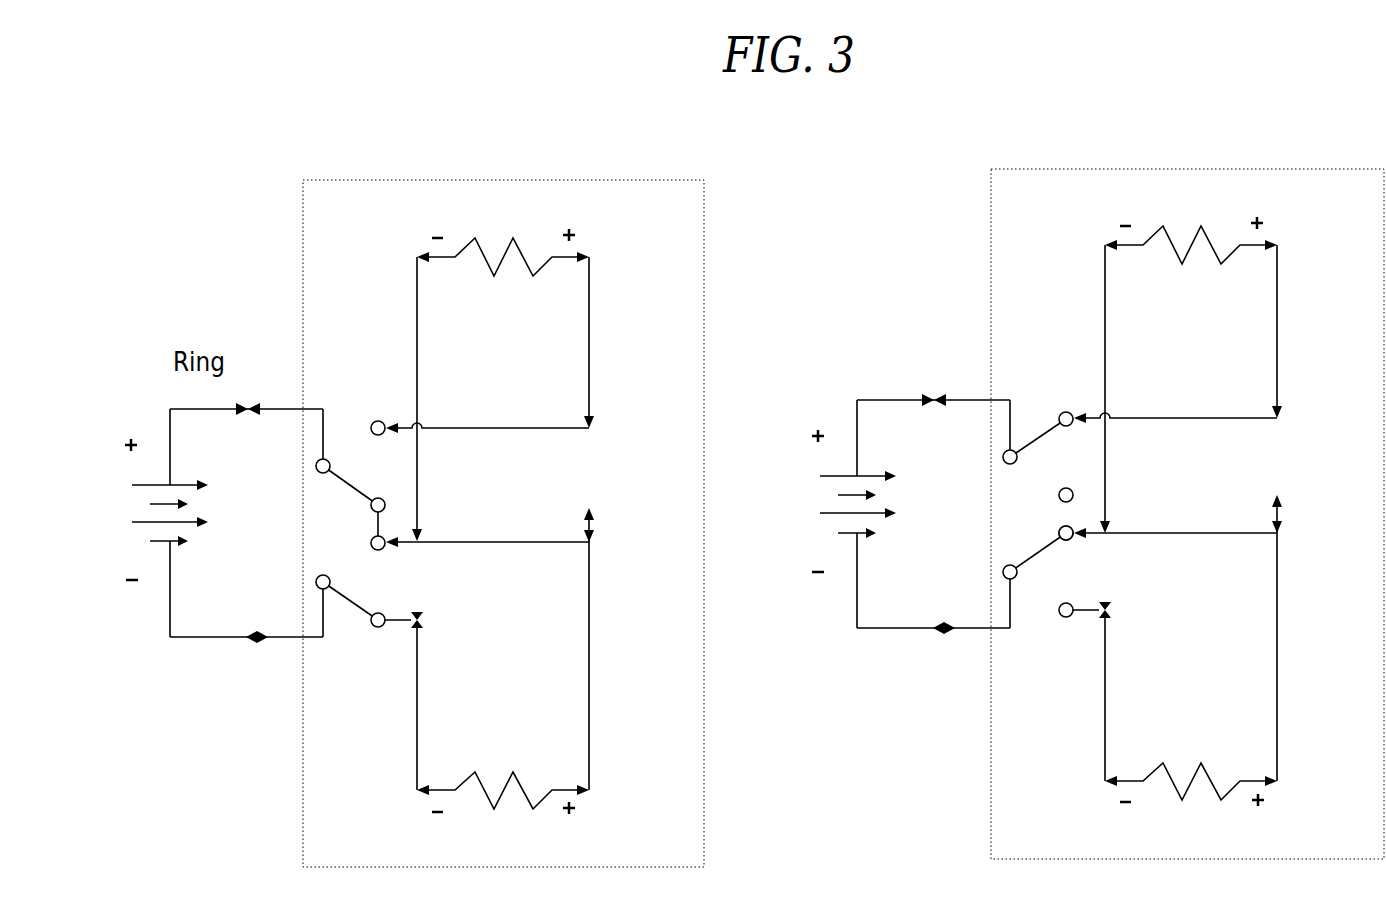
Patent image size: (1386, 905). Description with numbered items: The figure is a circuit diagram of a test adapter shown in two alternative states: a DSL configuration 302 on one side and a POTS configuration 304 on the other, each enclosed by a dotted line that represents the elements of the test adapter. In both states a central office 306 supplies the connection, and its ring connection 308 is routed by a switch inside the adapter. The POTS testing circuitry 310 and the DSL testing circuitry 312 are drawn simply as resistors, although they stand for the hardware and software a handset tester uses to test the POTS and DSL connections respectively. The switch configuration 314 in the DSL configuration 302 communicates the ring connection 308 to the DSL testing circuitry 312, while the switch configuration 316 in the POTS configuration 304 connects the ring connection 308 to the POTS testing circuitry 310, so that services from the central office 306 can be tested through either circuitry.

The DSL configuration 302 is at (526, 168).
The POTS configuration 304 is at (1211, 152).
The central office 306 is at (106, 557).
The ring connection 308 is at (197, 409).
The POTS testing circuitry 310 is at (664, 321).
The DSL testing circuitry 312 is at (656, 787).
The switch configuration 314 is at (347, 615).
The switch configuration 316 is at (1044, 568).